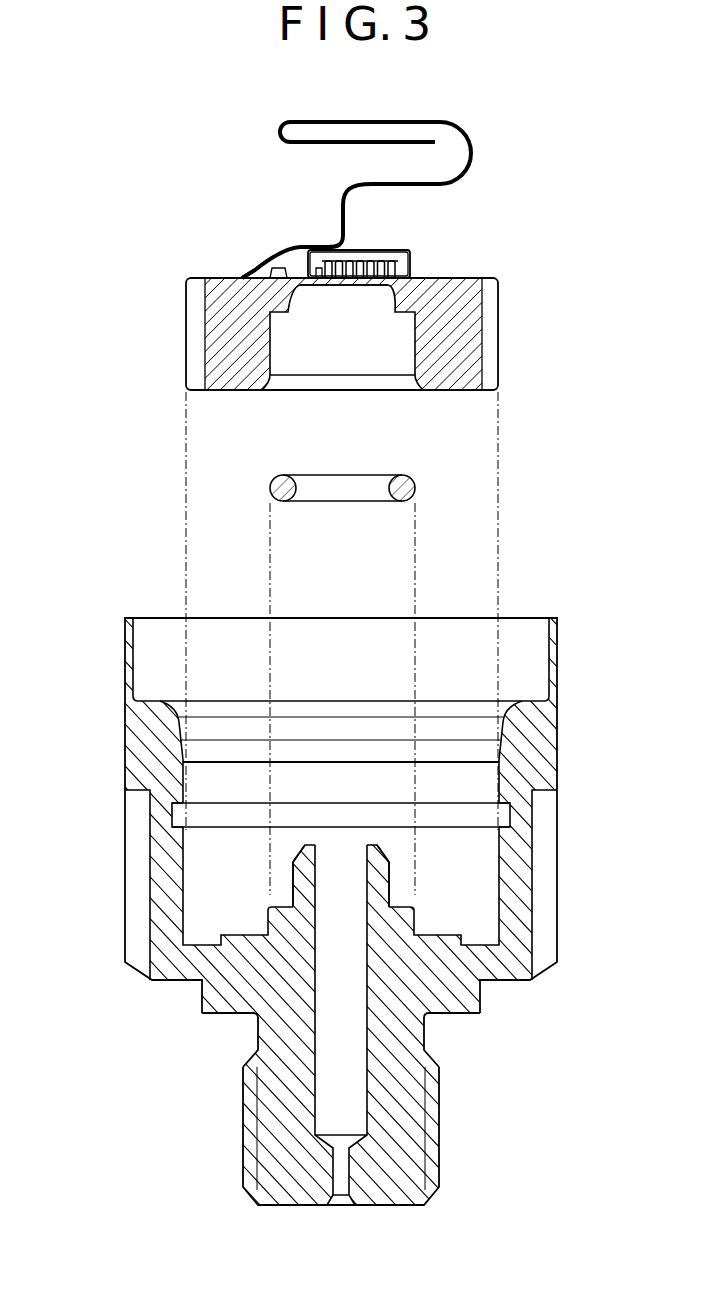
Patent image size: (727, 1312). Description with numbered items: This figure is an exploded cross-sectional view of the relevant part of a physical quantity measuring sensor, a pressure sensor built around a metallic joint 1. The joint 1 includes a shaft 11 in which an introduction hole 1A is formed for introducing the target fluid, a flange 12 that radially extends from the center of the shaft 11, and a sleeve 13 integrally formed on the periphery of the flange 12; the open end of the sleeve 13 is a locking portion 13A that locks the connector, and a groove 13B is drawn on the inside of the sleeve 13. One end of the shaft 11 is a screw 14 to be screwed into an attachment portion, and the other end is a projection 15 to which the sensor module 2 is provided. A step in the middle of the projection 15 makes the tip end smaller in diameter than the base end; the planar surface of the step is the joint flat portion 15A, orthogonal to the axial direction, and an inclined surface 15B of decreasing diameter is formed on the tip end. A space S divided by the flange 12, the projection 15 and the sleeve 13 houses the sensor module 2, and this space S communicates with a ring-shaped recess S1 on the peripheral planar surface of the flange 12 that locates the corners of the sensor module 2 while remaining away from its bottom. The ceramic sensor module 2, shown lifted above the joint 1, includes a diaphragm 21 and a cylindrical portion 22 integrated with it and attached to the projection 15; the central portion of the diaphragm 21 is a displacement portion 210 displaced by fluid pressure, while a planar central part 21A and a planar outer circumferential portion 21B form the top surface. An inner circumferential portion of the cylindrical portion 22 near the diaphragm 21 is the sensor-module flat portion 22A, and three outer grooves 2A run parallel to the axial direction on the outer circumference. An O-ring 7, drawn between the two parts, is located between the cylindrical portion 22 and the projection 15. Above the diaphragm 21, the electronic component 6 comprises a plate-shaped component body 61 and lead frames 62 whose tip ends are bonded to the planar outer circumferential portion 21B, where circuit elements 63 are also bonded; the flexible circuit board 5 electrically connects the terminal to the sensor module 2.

The joint 1 is at (202, 1025).
The introduction hole 1A is at (330, 1074).
The shaft 11 is at (400, 1037).
The flange 12 is at (230, 968).
The sleeve 13 is at (163, 873).
The locking portion 13A is at (557, 648).
The groove 13B is at (180, 815).
The screw 14 is at (437, 1160).
The projection 15 is at (380, 933).
The joint flat portion 15A is at (382, 882).
The inclined surface 15B is at (389, 853).
The space S is at (213, 887).
The recess S1 is at (197, 942).
The sensor module 2 is at (200, 250).
The outer groove 2A is at (186, 306).
The diaphragm 21 is at (362, 288).
The planar central part 21A is at (418, 262).
The planar outer circumferential portion 21B is at (470, 282).
The displacement portion 210 is at (345, 289).
The cylindrical portion 22 is at (455, 372).
The sensor-module flat portion 22A is at (280, 317).
The flexible circuit board 5 is at (438, 120).
The electronic component 6 is at (480, 192).
The component body 61 is at (380, 257).
The lead frame 62 is at (396, 262).
The circuit element 63 is at (272, 265).
The O-ring 7 is at (349, 478).